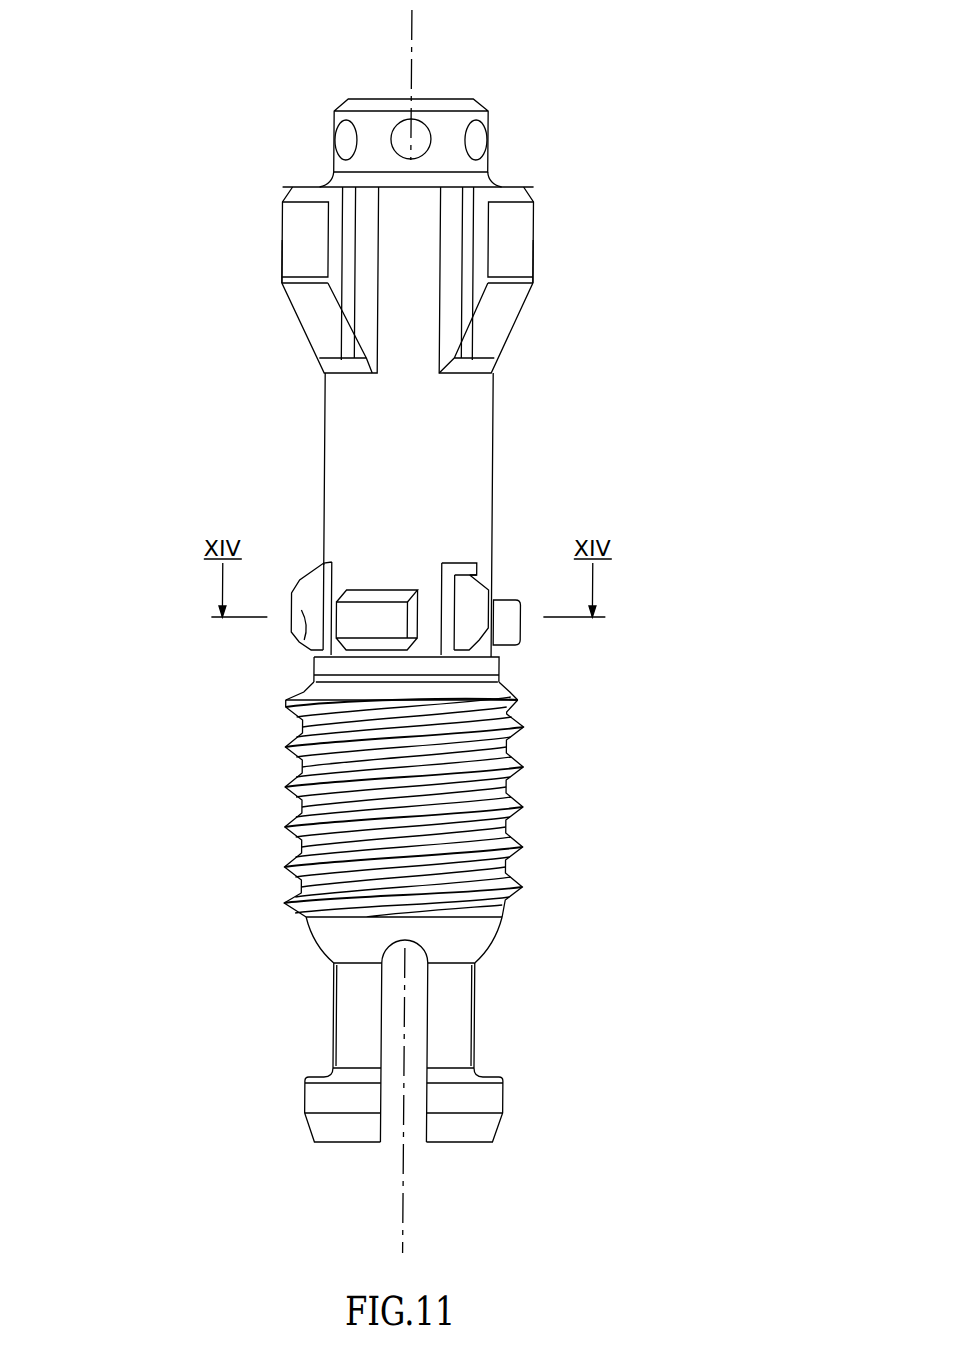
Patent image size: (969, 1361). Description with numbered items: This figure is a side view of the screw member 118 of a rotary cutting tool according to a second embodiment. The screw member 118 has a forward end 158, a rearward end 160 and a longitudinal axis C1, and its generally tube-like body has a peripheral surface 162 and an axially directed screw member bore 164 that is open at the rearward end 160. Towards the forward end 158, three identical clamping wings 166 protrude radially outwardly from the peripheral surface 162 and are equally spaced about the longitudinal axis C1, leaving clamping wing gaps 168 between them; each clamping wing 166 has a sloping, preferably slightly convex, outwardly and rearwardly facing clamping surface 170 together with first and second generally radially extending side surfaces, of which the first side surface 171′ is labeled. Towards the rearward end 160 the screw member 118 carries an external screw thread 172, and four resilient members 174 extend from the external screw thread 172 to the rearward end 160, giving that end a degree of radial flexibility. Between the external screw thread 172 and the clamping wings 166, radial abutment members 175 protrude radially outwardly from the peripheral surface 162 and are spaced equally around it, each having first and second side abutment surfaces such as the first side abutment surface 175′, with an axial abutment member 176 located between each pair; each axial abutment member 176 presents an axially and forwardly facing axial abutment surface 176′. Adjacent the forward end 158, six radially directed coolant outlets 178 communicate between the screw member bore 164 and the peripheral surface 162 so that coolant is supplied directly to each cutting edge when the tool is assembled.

The screw member 118 is at (341, 626).
The longitudinal axis C1 is at (447, 631).
The forward end 158 is at (426, 386).
The rearward end 160 is at (367, 942).
The peripheral surface 162 is at (474, 388).
The screw member bore 164 is at (342, 1041).
The clamping wings 166 is at (421, 262).
The clamping wing gaps 168 is at (469, 239).
The clamping surface 170 is at (432, 343).
The first side surface 171′ is at (530, 323).
The external screw thread 172 is at (452, 807).
The resilient members 174 is at (431, 1127).
The radial abutment members 175 is at (448, 580).
The first side abutment surface 175′ is at (541, 637).
The axial abutment member 176 is at (444, 655).
The axial abutment surface 176′ is at (454, 538).
The coolant outlets 178 is at (395, 116).